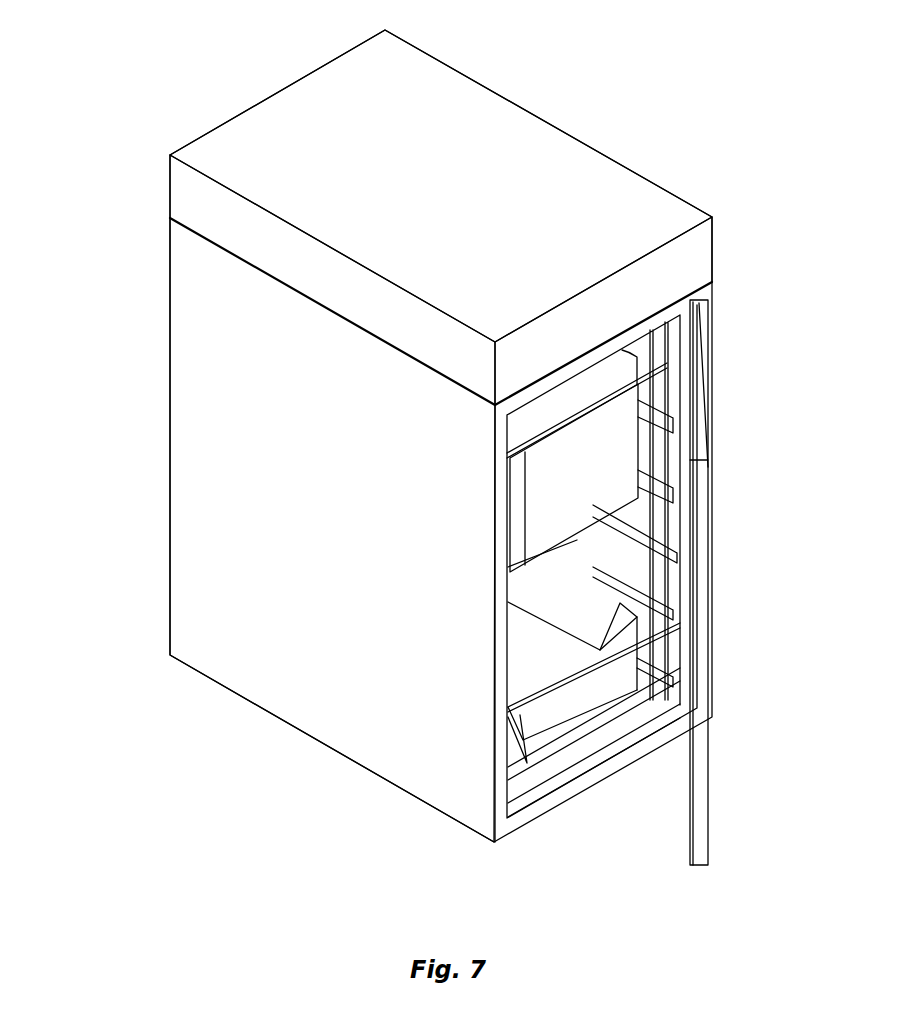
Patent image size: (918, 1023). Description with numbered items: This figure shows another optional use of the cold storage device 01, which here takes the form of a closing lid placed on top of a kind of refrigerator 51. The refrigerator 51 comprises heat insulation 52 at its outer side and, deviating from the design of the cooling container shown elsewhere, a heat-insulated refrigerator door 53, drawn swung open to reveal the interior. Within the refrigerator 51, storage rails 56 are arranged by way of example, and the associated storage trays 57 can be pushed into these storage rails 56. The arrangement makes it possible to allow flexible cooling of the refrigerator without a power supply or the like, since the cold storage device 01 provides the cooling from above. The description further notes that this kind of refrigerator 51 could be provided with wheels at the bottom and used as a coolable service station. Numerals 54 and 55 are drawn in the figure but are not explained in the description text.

The cold storage device 01 is at (272, 160).
The refrigerator 51 is at (116, 679).
The heat insulation 52 is at (360, 605).
The heat-insulated refrigerator door 53 is at (700, 723).
The interior frame 54 is at (602, 561).
The lower drawer basket 55 is at (586, 592).
The storage rails 56 is at (640, 543).
The storage trays 57 is at (573, 468).